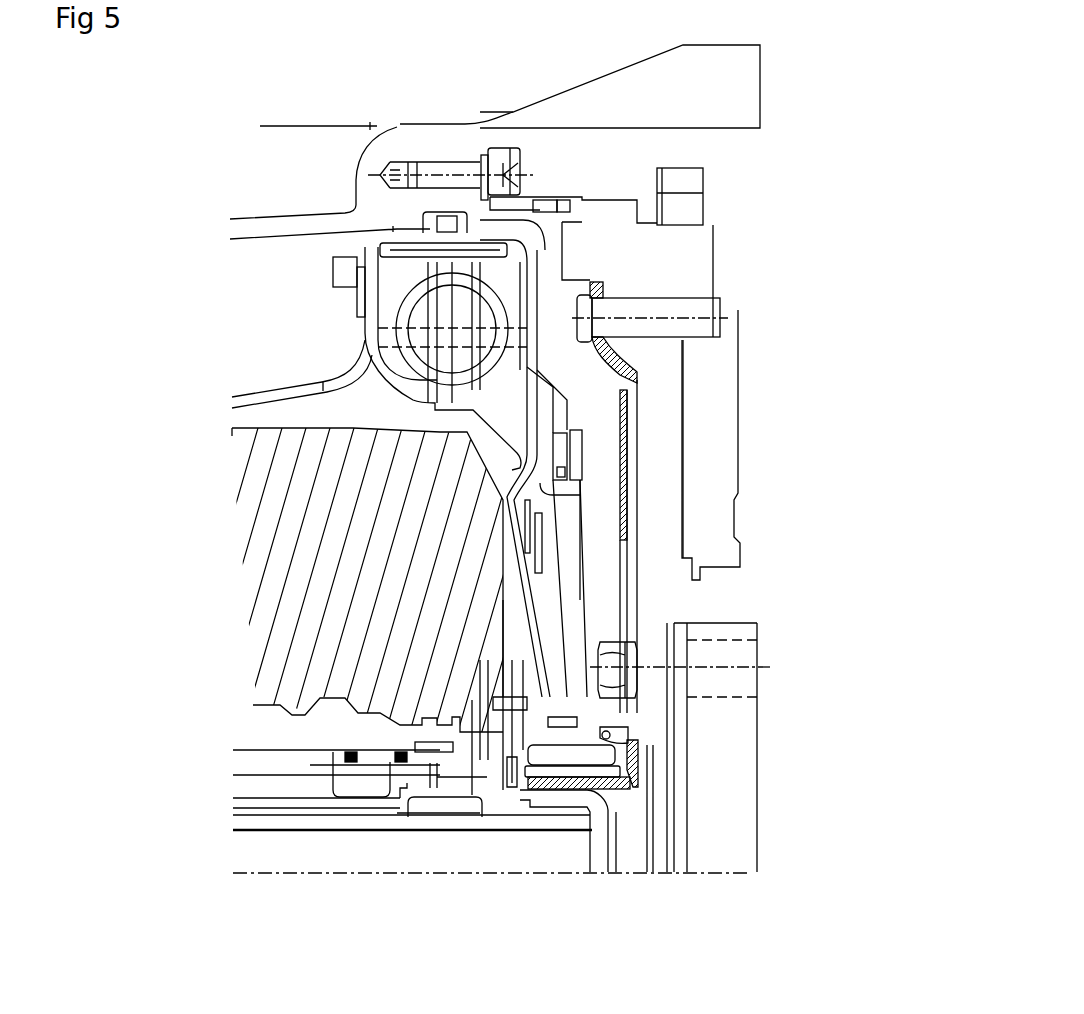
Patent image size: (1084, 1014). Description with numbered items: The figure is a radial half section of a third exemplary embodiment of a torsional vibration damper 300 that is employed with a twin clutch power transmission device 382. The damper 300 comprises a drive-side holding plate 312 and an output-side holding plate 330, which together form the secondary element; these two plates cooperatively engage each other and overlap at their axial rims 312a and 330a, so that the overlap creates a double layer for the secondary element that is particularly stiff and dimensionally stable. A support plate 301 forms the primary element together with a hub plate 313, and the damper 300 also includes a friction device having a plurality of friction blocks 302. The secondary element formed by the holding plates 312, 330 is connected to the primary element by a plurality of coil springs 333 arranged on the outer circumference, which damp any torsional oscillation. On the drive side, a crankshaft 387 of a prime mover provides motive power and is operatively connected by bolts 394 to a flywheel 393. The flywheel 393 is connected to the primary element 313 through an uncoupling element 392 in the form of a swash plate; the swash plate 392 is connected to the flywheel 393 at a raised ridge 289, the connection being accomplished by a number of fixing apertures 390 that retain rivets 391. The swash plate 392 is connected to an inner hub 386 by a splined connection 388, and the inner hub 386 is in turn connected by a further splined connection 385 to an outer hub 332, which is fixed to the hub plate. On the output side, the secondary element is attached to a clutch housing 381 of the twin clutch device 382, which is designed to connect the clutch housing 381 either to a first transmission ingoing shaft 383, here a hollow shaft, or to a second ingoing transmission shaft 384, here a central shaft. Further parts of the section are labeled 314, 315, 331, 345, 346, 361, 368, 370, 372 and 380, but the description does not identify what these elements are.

The raised ridge 289 is at (613, 302).
The torsional vibration damper 300 is at (333, 105).
The support plate 301 is at (528, 507).
The friction blocks 302 is at (562, 465).
The drive-side holding plate 312 is at (520, 300).
The axial rim 312a is at (483, 258).
The hub plate 313 is at (640, 503).
The diaphragm spring 314 is at (627, 472).
The spring support 315 is at (558, 562).
The output-side holding plate 330 is at (393, 397).
The axial rim 330a is at (430, 317).
The retaining bracket 331 is at (363, 303).
The outer hub 332 is at (544, 754).
The coil springs 333 is at (477, 300).
The bearing outer race 345 is at (376, 257).
The bearing inner race 346 is at (423, 248).
The retaining ring 361 is at (537, 527).
The cover 368 is at (477, 300).
The flange 370 is at (342, 277).
The bolt 372 is at (453, 307).
The seal 380 is at (384, 254).
The clutch housing 381 is at (272, 397).
The twin clutch power transmission device 382 is at (373, 573).
The first transmission ingoing shaft 383 is at (285, 820).
The second ingoing transmission shaft 384 is at (431, 853).
The splined connection 385 is at (573, 773).
The inner hub 386 is at (622, 782).
The crankshaft 387 is at (722, 798).
The splined connection 388 is at (637, 773).
The fixing apertures 390 is at (657, 310).
The rivets 391 is at (576, 445).
The uncoupling element 392 is at (562, 445).
The flywheel 393 is at (658, 463).
The bolts 394 is at (617, 667).